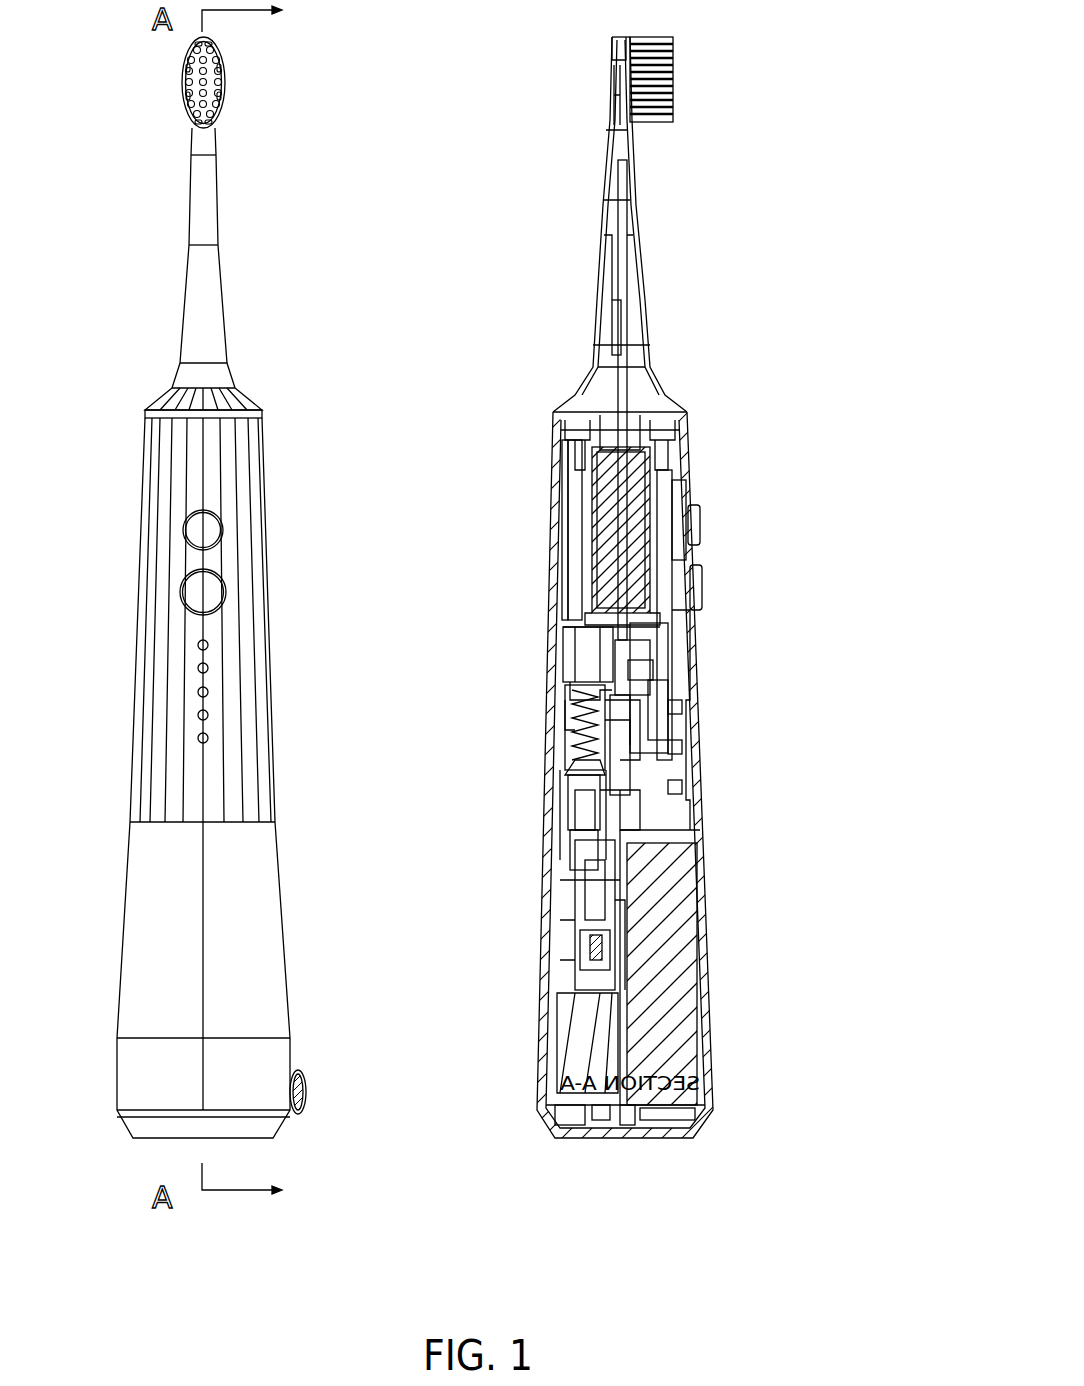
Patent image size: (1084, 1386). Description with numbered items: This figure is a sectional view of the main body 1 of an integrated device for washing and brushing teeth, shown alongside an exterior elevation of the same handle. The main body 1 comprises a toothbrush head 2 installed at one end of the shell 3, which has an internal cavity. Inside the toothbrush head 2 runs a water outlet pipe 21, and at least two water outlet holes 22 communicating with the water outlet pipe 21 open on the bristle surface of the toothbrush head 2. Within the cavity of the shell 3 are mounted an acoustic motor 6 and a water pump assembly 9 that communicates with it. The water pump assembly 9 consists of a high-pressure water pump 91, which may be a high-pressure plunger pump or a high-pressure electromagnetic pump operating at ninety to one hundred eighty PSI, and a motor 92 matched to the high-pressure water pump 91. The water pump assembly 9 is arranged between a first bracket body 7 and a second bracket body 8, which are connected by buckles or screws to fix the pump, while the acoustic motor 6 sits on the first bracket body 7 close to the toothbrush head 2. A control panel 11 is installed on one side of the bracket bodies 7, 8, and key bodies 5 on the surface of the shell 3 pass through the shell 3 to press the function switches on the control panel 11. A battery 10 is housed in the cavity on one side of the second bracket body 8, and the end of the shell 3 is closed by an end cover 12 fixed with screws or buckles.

The main body 1 is at (688, 410).
The toothbrush head 2 is at (603, 205).
The water outlet pipe 21 is at (612, 150).
The water outlet holes 22 is at (617, 97).
The shell 3 is at (553, 548).
The key body 5 is at (698, 522).
The acoustic motor 6 is at (597, 510).
The bracket body 1 7 is at (560, 660).
The bracket body 2 8 is at (640, 655).
The water pump assembly 9 is at (553, 768).
The high-pressure water pump 91 is at (568, 820).
The motor 92 is at (575, 1027).
The battery 10 is at (653, 953).
The control panel 11 is at (683, 562).
The end cover 12 is at (555, 1125).